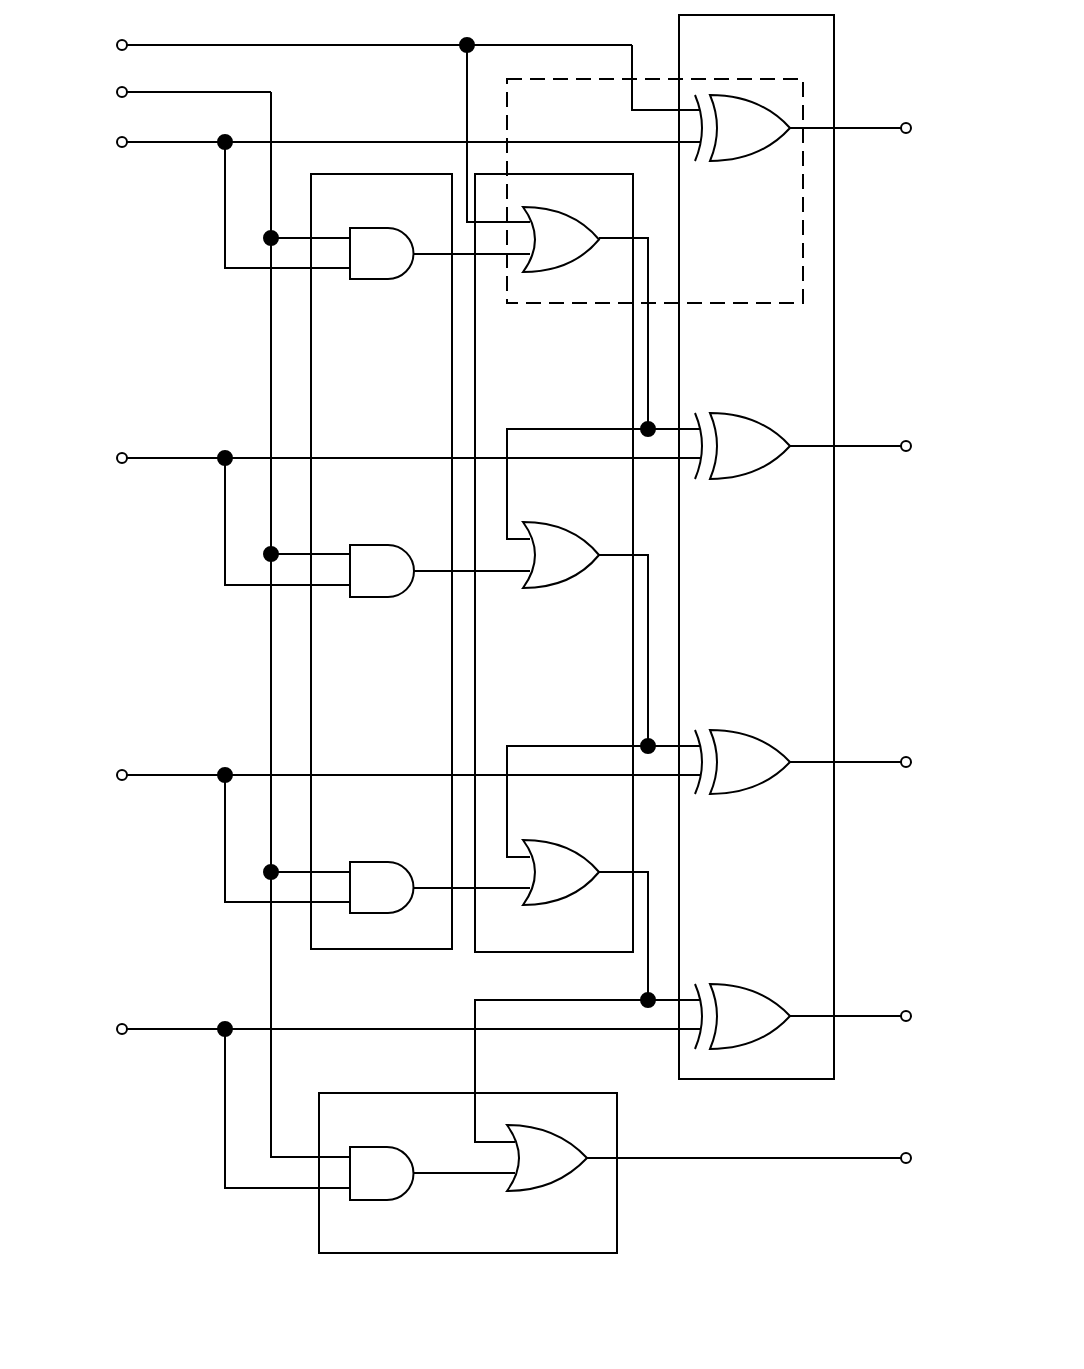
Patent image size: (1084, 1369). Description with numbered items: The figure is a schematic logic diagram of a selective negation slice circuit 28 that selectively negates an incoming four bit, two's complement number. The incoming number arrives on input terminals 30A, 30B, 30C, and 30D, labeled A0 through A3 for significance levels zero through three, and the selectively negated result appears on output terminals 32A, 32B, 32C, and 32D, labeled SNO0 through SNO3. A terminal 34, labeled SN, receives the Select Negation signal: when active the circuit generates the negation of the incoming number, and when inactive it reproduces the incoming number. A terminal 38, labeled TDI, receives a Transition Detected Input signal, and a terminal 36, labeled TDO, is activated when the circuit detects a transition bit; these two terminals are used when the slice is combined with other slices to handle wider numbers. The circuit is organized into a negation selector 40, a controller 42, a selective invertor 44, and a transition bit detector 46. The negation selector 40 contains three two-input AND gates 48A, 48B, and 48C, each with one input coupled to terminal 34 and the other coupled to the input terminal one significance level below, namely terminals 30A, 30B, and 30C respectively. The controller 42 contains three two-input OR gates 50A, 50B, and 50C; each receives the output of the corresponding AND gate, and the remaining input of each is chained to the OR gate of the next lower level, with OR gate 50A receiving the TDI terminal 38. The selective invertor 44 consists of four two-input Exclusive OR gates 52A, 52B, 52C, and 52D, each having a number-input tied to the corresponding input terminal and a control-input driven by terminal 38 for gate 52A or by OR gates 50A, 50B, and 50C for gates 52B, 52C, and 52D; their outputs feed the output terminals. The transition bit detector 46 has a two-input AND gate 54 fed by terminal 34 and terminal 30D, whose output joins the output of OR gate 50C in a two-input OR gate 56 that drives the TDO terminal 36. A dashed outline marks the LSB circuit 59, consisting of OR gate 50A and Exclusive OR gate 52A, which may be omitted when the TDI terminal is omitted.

The selective negation slice circuit 28 is at (185, 1249).
The TDI terminal 38 is at (124, 50).
The SN terminal 34 is at (124, 97).
The input terminal 30A is at (124, 147).
The input terminal 30B is at (124, 463).
The input terminal 30C is at (124, 780).
The input terminal 30D is at (124, 1034).
The output terminal 32A is at (903, 133).
The output terminal 32B is at (903, 451).
The output terminal 32C is at (903, 767).
The output terminal 32D is at (903, 1021).
The TDO terminal 36 is at (903, 1163).
The negation selector 40 is at (313, 950).
The controller 42 is at (475, 953).
The selective invertor 44 is at (753, 1080).
The transition bit detector 46 is at (618, 1254).
The AND gate 48A is at (368, 280).
The AND gate 48B is at (368, 598).
The AND gate 48C is at (373, 862).
The OR gate 50A is at (555, 272).
The OR gate 50B is at (542, 588).
The OR gate 50C is at (563, 840).
The Exclusive OR gate 52A is at (730, 163).
The Exclusive OR gate 52B is at (735, 413).
The Exclusive OR gate 52C is at (745, 794).
The Exclusive OR gate 52D is at (745, 985).
The AND gate 54 is at (353, 1146).
The OR gate 56 is at (568, 1127).
The LSB circuit 59 is at (673, 78).